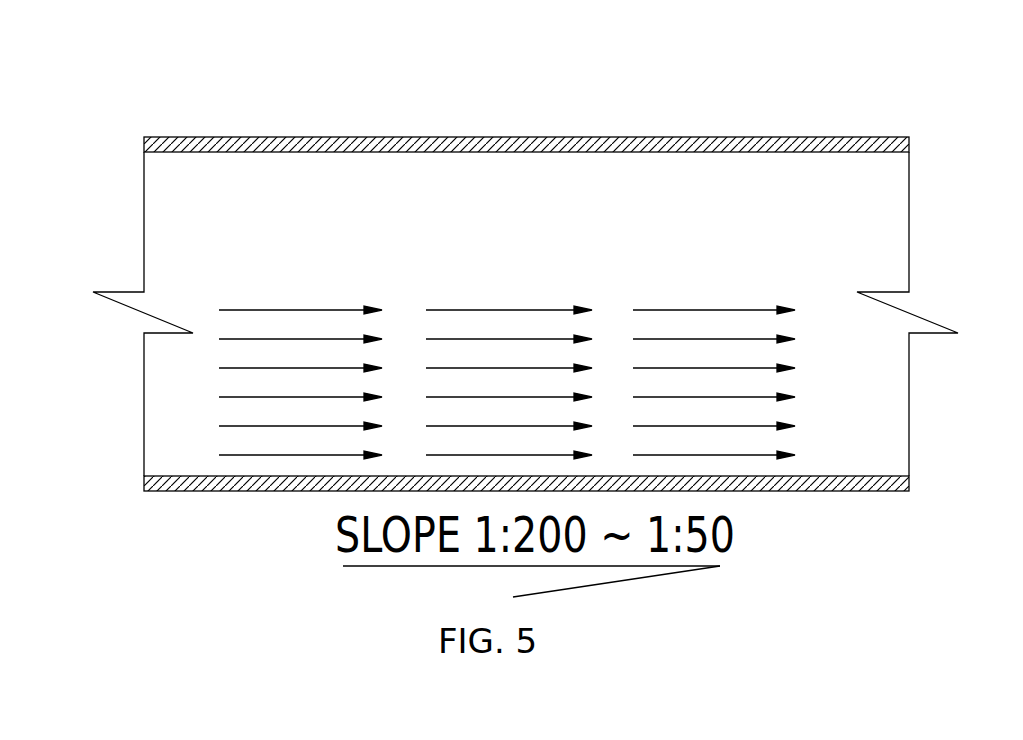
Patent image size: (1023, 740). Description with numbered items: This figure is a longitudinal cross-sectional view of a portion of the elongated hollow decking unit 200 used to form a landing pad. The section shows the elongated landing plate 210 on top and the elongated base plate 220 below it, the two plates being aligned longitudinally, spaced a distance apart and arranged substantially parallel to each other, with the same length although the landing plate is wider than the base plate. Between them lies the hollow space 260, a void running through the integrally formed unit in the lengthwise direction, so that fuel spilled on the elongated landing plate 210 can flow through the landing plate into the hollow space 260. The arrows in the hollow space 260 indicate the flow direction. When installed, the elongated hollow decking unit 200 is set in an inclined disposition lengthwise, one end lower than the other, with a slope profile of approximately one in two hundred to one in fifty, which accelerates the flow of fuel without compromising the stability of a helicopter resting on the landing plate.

The elongated hollow decking unit 200 is at (558, 288).
The elongated landing plate 210 is at (632, 137).
The elongated base plate 220 is at (785, 489).
The hollow space 260 is at (878, 220).